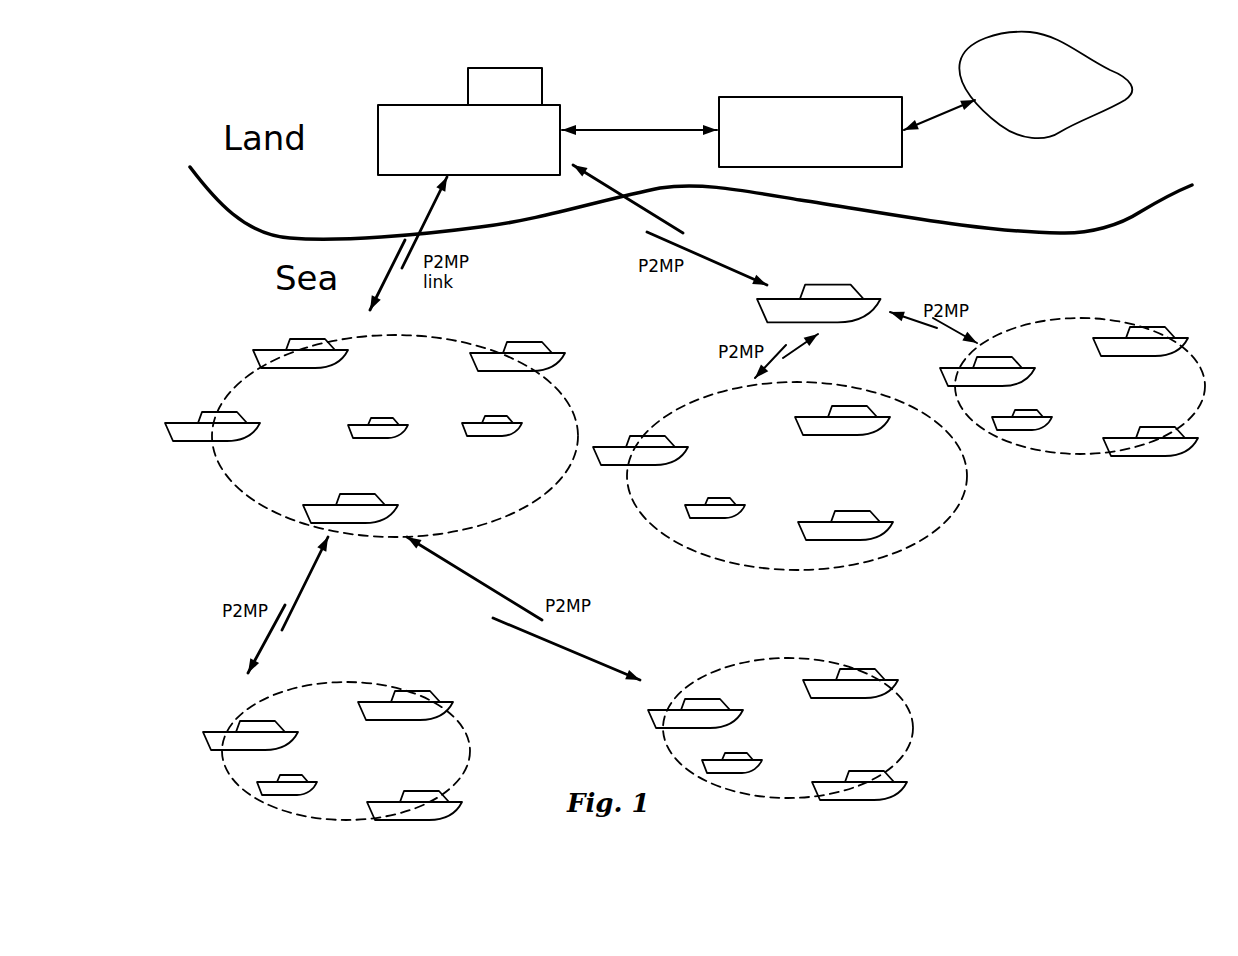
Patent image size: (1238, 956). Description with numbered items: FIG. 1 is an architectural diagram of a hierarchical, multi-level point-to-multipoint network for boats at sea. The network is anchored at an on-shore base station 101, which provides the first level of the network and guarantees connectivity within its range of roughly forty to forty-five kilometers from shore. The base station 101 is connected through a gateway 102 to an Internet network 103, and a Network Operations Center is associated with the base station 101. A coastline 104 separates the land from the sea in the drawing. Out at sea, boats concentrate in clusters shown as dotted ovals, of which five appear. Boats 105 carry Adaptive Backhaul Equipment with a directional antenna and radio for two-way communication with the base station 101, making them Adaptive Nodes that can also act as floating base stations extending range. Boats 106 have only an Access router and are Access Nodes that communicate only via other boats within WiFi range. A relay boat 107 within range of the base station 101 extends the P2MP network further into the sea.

The base station 101 is at (455, 105).
The gateway 102 is at (741, 97).
The Internet network 103 is at (1040, 137).
The coastline between land and sea 104 is at (250, 212).
The boat comprising Adaptive Backhaul Equipment 105 is at (268, 346).
The boat having only an Access router 106 is at (358, 423).
The relay vessel 107 is at (808, 284).